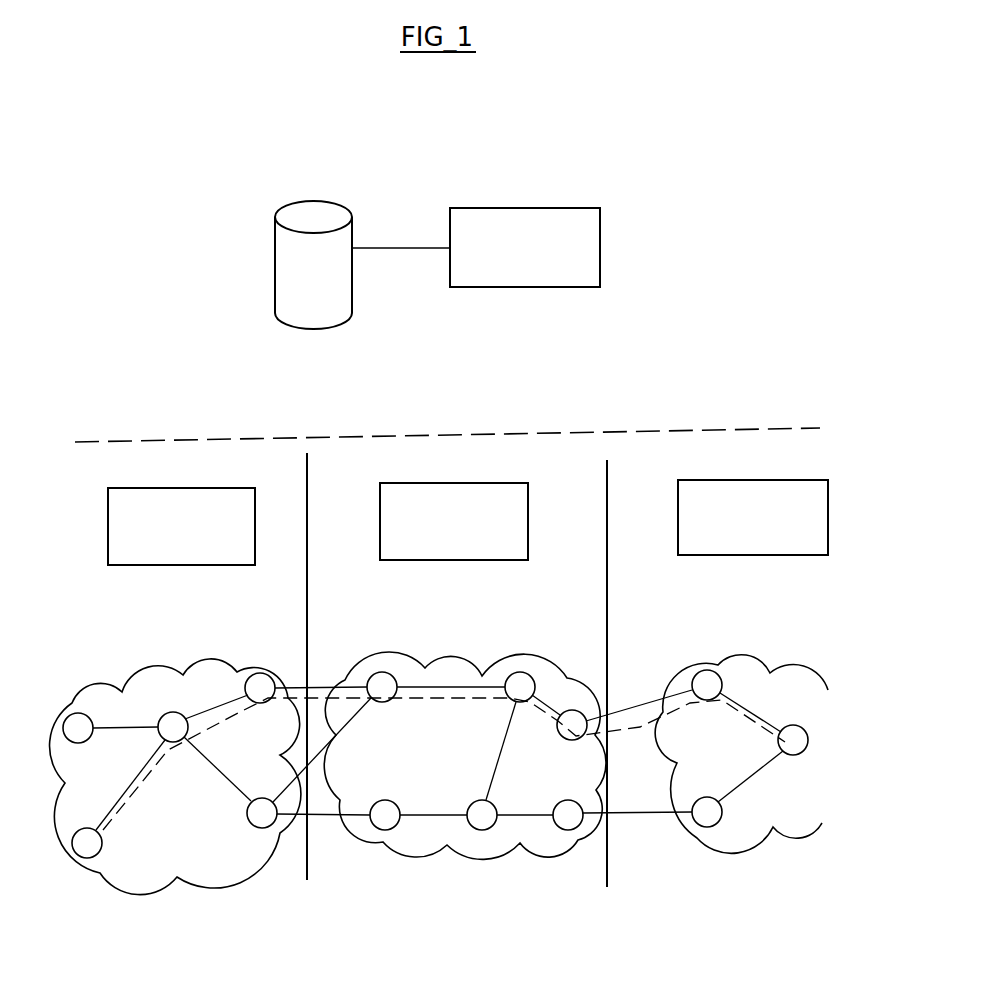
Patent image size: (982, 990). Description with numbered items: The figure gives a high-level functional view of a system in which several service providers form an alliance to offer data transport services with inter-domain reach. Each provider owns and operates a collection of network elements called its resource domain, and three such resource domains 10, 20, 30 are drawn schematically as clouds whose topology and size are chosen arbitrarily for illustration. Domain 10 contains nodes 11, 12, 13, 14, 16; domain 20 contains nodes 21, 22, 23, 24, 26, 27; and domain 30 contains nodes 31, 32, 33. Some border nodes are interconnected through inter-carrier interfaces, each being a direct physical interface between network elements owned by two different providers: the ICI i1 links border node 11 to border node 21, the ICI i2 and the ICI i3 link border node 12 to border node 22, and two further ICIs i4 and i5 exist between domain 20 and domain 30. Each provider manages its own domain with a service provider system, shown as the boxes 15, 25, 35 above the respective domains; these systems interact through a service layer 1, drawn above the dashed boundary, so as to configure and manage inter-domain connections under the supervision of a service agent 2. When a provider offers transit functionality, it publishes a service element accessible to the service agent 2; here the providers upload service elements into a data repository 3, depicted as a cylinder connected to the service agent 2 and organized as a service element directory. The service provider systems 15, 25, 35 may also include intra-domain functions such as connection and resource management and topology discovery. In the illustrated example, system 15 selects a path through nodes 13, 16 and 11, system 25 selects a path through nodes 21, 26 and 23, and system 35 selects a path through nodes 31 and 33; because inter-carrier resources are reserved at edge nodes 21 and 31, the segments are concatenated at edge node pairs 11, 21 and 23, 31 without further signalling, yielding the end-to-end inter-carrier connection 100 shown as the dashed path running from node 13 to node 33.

The service layer 1 is at (228, 328).
The service agent 2 is at (538, 208).
The data repository 3 is at (275, 248).
The resource domain 10 is at (127, 670).
The border node 11 is at (262, 673).
The border node 12 is at (262, 829).
The node 13 is at (83, 858).
The node 14 is at (72, 715).
The service provider system 15 is at (108, 535).
The node 16 is at (176, 712).
The resource domain 20 is at (430, 858).
The border node 21 is at (382, 672).
The border node 22 is at (385, 831).
The node 23 is at (576, 711).
The node 24 is at (566, 831).
The service provider system 25 is at (380, 527).
The node 26 is at (522, 672).
The node 27 is at (483, 832).
The resource domain 30 is at (757, 851).
The node 31 is at (707, 670).
The node 32 is at (698, 827).
The node 33 is at (802, 726).
The service provider system 35 is at (678, 525).
The end-to-end inter-carrier connection 100 is at (445, 697).
The inter-carrier interface i1 is at (323, 690).
The inter-carrier interface i2 is at (325, 816).
The inter-carrier interface i3 is at (335, 792).
The inter-carrier interface i4 is at (643, 700).
The inter-carrier interface i5 is at (643, 815).